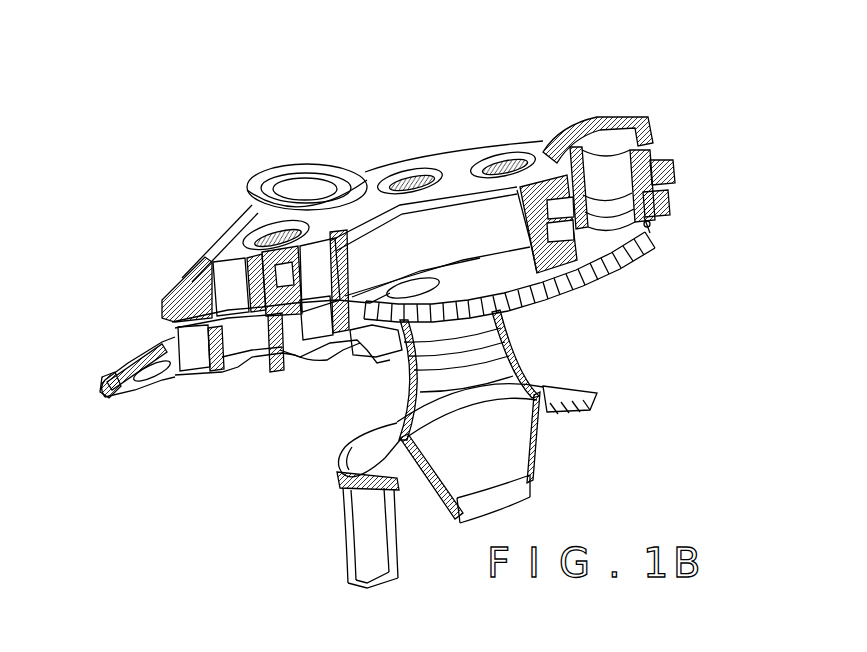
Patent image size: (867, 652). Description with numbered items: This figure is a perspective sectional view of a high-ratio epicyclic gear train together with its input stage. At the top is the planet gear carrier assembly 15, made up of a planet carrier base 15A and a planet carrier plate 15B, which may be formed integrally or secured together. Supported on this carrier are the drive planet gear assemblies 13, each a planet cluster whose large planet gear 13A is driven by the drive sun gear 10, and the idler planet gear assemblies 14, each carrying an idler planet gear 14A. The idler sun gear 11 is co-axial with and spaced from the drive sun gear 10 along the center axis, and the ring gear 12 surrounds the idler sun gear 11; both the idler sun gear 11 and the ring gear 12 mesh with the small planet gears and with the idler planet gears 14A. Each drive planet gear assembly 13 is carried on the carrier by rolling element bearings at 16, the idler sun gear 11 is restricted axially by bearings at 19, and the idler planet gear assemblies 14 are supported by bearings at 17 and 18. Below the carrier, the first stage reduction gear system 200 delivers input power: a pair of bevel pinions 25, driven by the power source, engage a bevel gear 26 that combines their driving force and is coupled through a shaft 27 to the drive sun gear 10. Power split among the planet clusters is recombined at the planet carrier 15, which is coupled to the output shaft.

The planet gear carrier assembly 15 is at (428, 226).
The planet carrier plate 15B is at (387, 168).
The planet carrier base 15A is at (371, 348).
The bearing location for idler planet gear assemblies 18 is at (633, 127).
The ring gear 12 is at (650, 160).
The idler planet gear 14A is at (673, 177).
The bearing location for idler planet gear assemblies 17 is at (668, 213).
The idler planet gear assembly 14 is at (648, 227).
The drive sun gear 10 is at (510, 311).
The idler sun gear 11 is at (253, 323).
The rolling element bearing location 16 is at (175, 377).
The bearing location for idler sun gear 19 is at (337, 318).
The drive planet gear assembly 13 is at (108, 398).
The large planet gear 13A is at (133, 350).
The shaft 27 is at (510, 355).
The bevel gear 26 is at (592, 413).
The first stage reduction gear system 200 is at (297, 438).
The bevel pinion 25 is at (373, 553).